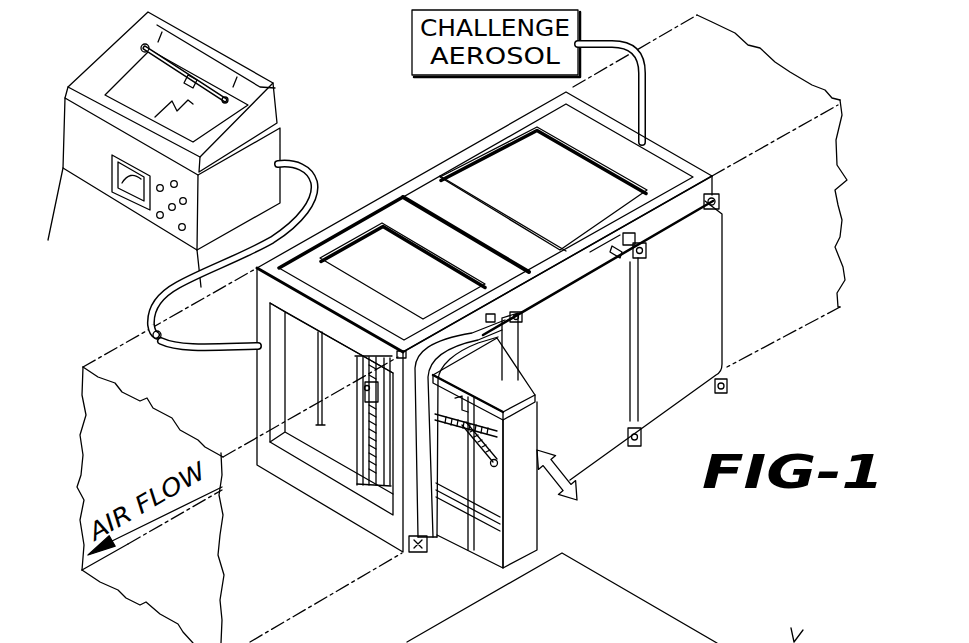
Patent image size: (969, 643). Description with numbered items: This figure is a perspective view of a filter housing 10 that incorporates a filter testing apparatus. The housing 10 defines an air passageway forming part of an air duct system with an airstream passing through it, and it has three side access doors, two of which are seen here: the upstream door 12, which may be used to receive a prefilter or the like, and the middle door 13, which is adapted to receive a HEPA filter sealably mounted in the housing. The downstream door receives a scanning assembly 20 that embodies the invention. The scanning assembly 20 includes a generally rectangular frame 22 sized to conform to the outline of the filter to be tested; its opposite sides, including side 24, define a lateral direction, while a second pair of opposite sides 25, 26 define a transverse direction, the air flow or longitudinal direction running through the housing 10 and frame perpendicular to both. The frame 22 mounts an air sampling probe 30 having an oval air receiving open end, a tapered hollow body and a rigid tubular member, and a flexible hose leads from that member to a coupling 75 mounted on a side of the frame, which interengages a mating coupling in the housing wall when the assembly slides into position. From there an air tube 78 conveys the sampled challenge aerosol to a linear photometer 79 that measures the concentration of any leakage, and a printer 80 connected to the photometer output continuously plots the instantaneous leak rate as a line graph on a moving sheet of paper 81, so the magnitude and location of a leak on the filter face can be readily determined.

The filter housing 10 is at (409, 160).
The upstream door 12 is at (693, 316).
The middle door 13 is at (600, 343).
The scanning assembly 20 is at (562, 523).
The frame 22 is at (538, 409).
The frame side 24 is at (533, 524).
The frame side 25 is at (497, 384).
The frame side 26 is at (486, 535).
The air sampling probe 30 is at (497, 433).
The coupling 75 is at (366, 390).
The air tube 78 is at (334, 147).
The linear photometer 79 is at (80, 127).
The printer 80 is at (112, 63).
The moving sheet of paper 81 is at (157, 100).